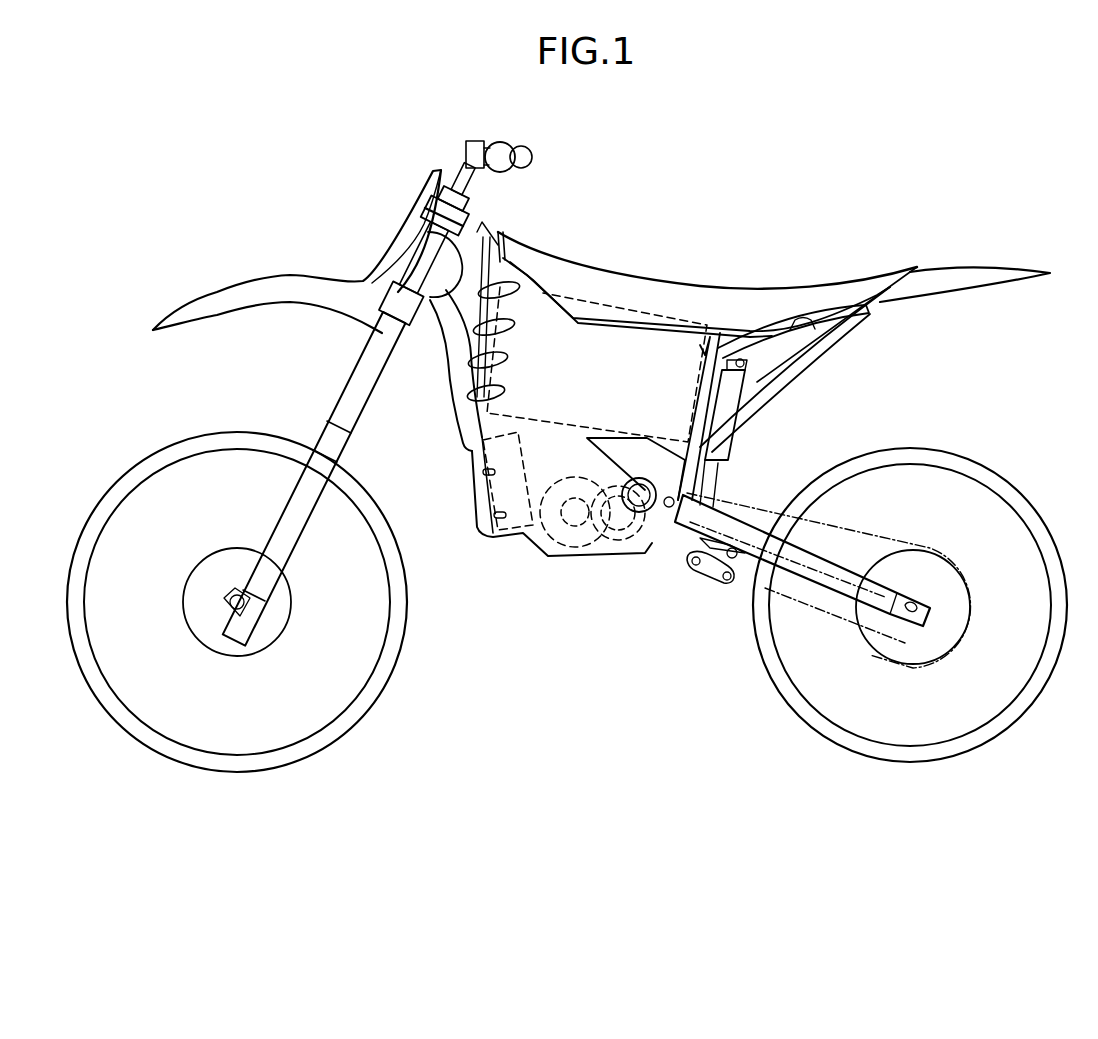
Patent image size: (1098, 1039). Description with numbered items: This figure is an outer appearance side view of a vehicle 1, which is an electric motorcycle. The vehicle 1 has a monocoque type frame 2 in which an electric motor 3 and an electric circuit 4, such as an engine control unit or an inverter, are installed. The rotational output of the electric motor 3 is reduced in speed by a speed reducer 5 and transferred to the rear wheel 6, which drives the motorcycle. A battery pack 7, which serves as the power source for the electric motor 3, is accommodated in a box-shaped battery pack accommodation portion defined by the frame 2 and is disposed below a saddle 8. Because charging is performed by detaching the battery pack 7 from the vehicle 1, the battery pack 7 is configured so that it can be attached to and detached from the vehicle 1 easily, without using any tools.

The vehicle 1 is at (945, 208).
The frame 2 is at (540, 556).
The electric motor 3 is at (573, 548).
The electric circuit 4 is at (513, 523).
The speed reducer 5 is at (613, 554).
The rear wheel 6 is at (917, 448).
The battery pack 7 is at (737, 413).
The saddle 8 is at (677, 287).